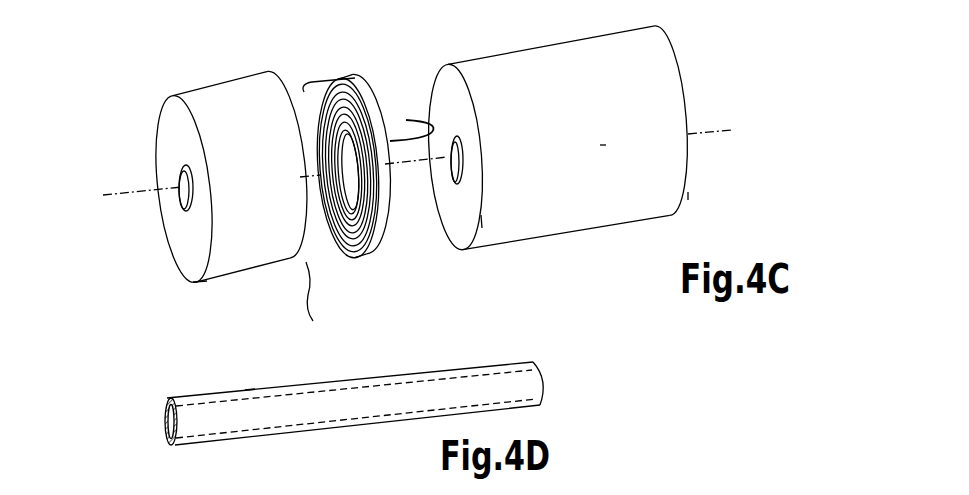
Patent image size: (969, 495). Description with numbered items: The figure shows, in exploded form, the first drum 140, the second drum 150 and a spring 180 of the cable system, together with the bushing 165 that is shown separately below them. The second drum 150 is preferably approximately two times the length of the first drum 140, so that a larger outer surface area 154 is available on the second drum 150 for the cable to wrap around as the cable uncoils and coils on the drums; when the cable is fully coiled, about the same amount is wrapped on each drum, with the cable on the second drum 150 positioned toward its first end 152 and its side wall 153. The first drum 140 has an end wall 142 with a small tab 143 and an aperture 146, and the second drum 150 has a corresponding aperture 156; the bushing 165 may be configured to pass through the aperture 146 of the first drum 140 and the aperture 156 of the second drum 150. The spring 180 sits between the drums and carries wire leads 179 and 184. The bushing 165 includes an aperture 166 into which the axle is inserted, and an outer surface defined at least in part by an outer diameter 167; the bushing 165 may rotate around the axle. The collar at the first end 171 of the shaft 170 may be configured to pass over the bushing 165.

In FIG. 4C, the first drum 140 is at (162, 125).
In FIG. 4C, the end wall of first housing portion 142 is at (207, 250).
In FIG. 4C, the tab 143 is at (318, 302).
In FIG. 4C, the aperture of the first drum 146 is at (183, 206).
In FIG. 4C, the second drum 150 is at (671, 62).
In FIG. 4C, the first end of the second drum 152 is at (482, 222).
In FIG. 4C, the side wall of second housing portion 153 is at (688, 197).
In FIG. 4C, the outer surface area of the second drum 154 is at (603, 145).
In FIG. 4C, the aperture of the second drum 156 is at (453, 184).
In FIG. 4D, the bushing 165 is at (506, 390).
In FIG. 4D, the aperture of the bushing 166 is at (165, 428).
In FIG. 4D, the outer diameter of the bushing 167 is at (250, 388).
In FIG. 4C, the shaft 170 is at (122, 1).
In FIG. 4C, the first end of the shaft 171 is at (329, 6).
In FIG. 4C, the wire lead 179 is at (404, 116).
In FIG. 4C, the coil 180 is at (350, 262).
In FIG. 4C, the wire lead 184 is at (318, 80).